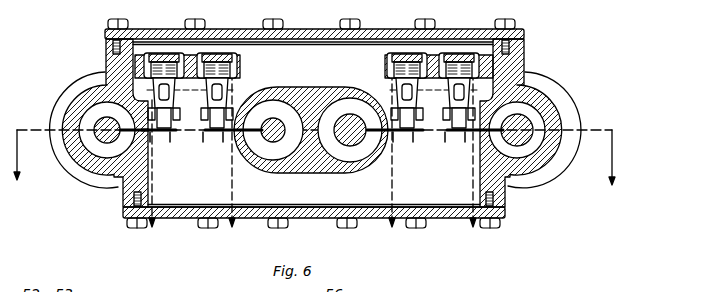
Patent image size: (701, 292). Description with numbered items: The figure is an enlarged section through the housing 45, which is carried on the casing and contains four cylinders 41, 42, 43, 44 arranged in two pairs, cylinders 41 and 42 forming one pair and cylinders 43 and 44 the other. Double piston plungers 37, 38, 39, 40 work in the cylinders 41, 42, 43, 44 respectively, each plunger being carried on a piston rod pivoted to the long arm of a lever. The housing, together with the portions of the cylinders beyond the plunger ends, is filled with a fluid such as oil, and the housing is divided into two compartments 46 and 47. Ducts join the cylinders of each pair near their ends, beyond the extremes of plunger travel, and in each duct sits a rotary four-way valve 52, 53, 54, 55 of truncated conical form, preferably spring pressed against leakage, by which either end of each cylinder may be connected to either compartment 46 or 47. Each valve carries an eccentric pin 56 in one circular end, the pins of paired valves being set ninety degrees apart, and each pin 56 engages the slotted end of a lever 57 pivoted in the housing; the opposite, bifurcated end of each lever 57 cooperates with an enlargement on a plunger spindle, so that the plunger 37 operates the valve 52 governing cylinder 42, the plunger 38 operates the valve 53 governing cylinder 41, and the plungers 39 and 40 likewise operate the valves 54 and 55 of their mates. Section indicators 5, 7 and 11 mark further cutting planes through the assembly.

The section line 5- 5 is at (313, 170).
The section line 7- 7 is at (190, 155).
The section line 11- 11 is at (435, 155).
The double piston plunger 37 is at (107, 125).
The double piston plunger 38 is at (273, 120).
The double piston plunger 39 is at (352, 116).
The double piston plunger 40 is at (532, 118).
The cylinder 41 is at (113, 153).
The cylinder 42 is at (280, 153).
The cylinder 43 is at (358, 153).
The cylinder 44 is at (532, 153).
The housing 45 is at (518, 78).
The compartment 46 is at (313, 67).
The compartment 47 is at (327, 204).
The four-way valve 52 is at (164, 53).
The four-way valve 53 is at (218, 53).
The four-way valve 54 is at (406, 53).
The four-way valve 55 is at (464, 53).
The pin 56 is at (322, 151).
The lever 57 is at (462, 143).